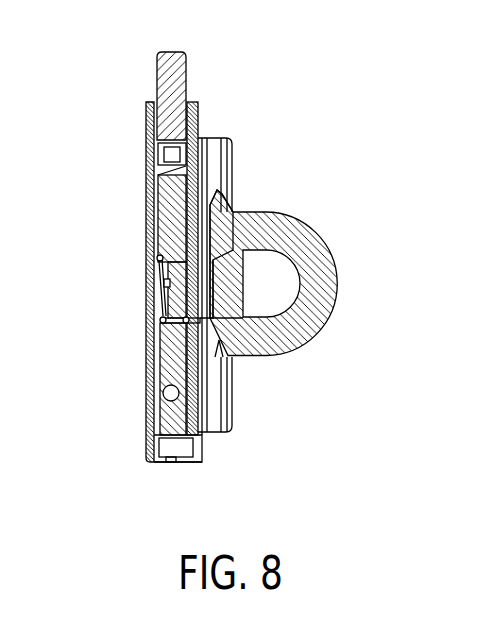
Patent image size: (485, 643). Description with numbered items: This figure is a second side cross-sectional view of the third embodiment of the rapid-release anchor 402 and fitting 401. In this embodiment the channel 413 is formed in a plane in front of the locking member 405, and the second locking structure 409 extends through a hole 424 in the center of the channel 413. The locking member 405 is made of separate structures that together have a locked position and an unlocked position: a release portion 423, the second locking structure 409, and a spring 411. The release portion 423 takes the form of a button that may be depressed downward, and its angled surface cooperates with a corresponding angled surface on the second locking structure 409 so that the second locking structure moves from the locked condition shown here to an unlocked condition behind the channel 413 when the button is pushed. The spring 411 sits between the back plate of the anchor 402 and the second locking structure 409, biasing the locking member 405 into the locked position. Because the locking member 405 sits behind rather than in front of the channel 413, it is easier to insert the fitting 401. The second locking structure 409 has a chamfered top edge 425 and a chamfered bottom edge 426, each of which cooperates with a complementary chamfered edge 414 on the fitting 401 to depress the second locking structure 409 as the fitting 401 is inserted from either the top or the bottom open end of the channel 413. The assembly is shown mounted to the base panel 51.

The base panel 51 is at (190, 443).
The fitting 401 is at (303, 271).
The anchor 402 is at (118, 332).
The locking member 405 is at (158, 78).
The second locking structure 409 is at (210, 263).
The spring 411 is at (160, 289).
The channel 413 is at (208, 410).
The chamfered edge 414 is at (235, 222).
The release portion 423 is at (182, 68).
The hole 424 is at (206, 313).
The chamfered top edge 425 is at (203, 277).
The chamfered bottom edge 426 is at (243, 316).